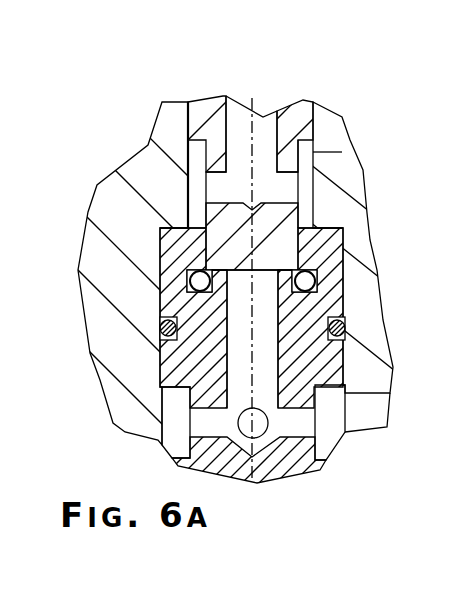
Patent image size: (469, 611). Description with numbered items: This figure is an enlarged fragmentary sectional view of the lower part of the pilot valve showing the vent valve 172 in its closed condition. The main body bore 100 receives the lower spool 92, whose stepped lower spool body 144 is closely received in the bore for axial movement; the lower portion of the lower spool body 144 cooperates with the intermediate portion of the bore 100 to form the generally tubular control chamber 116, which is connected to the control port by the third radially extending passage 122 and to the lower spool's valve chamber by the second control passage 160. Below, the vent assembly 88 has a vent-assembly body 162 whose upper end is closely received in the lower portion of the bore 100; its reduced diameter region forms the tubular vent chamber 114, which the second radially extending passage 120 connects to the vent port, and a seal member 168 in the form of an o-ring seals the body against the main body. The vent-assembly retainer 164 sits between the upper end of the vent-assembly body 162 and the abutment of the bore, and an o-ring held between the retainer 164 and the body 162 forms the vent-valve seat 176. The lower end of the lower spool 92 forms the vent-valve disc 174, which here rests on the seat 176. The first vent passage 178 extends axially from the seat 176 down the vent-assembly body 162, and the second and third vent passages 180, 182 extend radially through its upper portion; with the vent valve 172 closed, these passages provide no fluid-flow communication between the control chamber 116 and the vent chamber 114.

The vent assembly 88 is at (243, 481).
The lower spool 92 is at (300, 103).
The main body bore 100 is at (338, 252).
The vent chamber 114 is at (170, 422).
The control chamber 116 is at (192, 167).
The second radially extending passage 120 is at (363, 392).
The third radially extending passage 122 is at (327, 150).
The lower spool body 144 is at (208, 106).
The second control passage 160 is at (280, 203).
The vent-assembly body 162 is at (343, 350).
The vent-assembly retainer 164 is at (268, 279).
The seal member 168 is at (345, 328).
The vent valve 172 is at (318, 280).
The vent-valve disc 174 is at (297, 203).
The vent-valve seat 176 is at (345, 266).
The first vent passage 178 is at (282, 352).
The second vent passage 180 is at (302, 438).
The third vent passage 182 is at (260, 432).